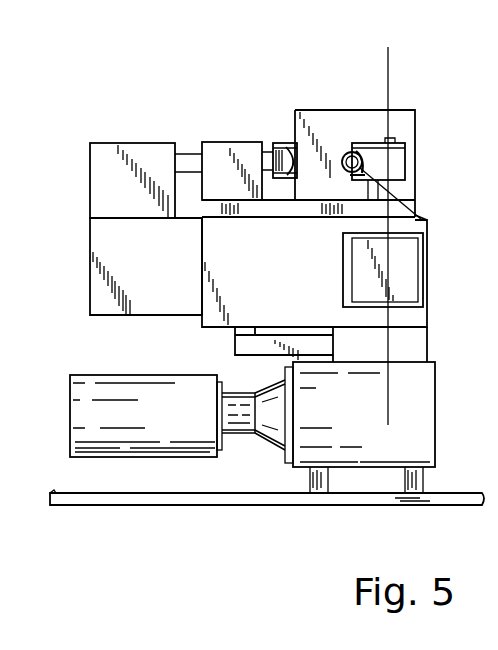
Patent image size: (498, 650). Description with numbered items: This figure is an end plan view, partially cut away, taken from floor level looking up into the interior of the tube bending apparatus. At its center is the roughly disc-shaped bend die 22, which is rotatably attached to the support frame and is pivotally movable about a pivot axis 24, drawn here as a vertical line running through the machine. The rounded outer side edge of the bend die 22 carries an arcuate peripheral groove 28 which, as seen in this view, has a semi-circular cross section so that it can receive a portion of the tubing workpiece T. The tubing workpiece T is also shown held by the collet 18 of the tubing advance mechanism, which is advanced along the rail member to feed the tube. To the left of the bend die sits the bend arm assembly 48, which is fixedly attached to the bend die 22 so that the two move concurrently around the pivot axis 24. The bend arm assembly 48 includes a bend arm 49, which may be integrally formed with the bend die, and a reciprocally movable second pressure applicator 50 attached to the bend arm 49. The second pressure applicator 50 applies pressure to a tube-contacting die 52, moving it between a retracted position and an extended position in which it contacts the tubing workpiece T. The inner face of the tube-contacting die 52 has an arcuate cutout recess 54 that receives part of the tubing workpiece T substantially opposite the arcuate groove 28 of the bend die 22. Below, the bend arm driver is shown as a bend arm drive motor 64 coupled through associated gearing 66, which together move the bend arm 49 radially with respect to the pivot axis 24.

The bend arm 49 is at (83, 230).
The bend arm assembly 48 is at (158, 286).
The second pressure applicator 50 is at (228, 153).
The tube-contacting die 52 is at (282, 148).
The arcuate cutout recess 54 is at (305, 160).
The collet 18 is at (345, 153).
The tubing workpiece T is at (348, 151).
The bend die 22 is at (400, 160).
The pivot axis 24 is at (391, 224).
The arcuate peripheral groove 28 is at (422, 220).
The bend arm drive motor 64 is at (140, 443).
The gearing 66 is at (420, 393).